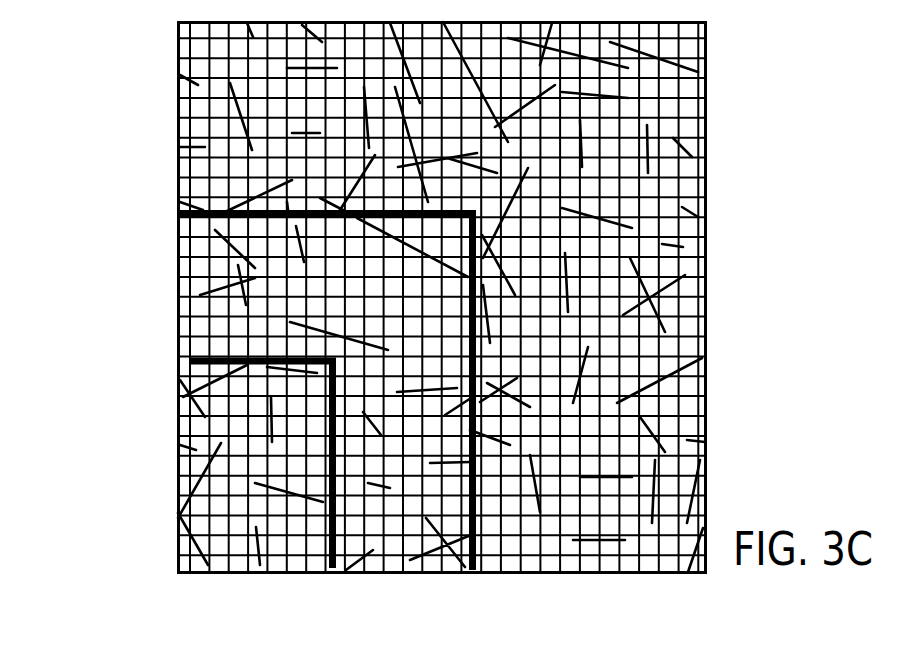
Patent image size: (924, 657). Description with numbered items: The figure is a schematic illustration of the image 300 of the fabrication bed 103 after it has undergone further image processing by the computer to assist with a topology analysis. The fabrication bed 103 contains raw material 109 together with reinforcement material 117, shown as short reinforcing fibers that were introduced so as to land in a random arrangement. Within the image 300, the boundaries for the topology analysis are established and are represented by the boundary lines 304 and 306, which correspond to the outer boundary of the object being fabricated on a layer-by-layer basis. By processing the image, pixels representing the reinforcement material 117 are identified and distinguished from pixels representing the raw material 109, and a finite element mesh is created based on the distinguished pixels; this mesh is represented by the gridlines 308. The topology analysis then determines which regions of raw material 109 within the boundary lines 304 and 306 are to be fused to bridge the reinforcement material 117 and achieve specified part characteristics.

The image 300 is at (121, 146).
The fabrication bed 103 is at (732, 118).
The boundary line 306 is at (375, 204).
The boundary line 304 is at (333, 357).
The gridlines 308 is at (683, 247).
The reinforcement material 117 is at (668, 380).
The raw material 109 is at (566, 548).